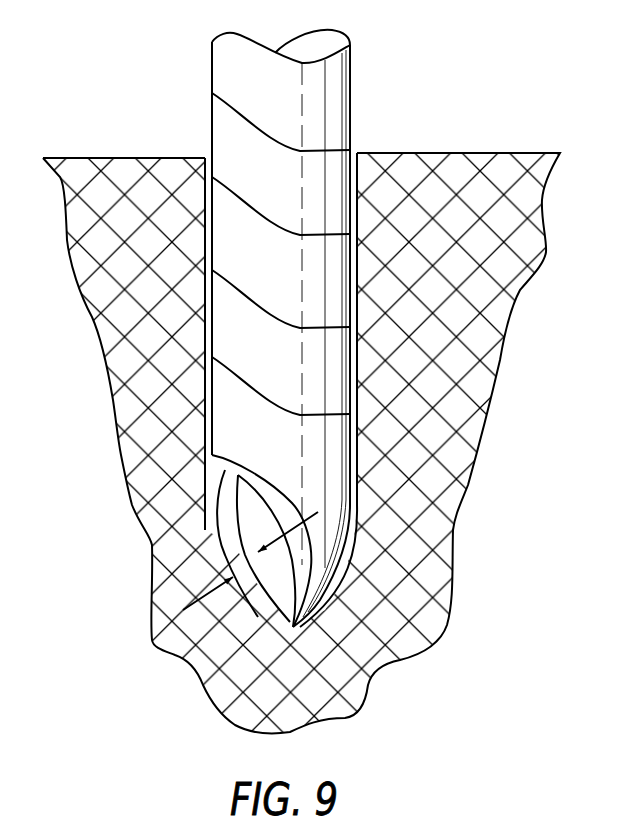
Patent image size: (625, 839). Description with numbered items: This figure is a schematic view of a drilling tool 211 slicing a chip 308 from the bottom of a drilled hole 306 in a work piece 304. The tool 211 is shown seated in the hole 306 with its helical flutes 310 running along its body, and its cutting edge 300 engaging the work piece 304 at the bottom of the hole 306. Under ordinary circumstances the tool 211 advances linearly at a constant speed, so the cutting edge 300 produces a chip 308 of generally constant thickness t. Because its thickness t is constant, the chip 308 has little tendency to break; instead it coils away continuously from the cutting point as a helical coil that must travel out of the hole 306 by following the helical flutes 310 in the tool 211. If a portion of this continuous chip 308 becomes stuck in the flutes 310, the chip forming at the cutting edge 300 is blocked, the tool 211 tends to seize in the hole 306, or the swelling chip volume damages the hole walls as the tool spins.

The drilling tool 211 is at (333, 94).
The cutting edge 300 is at (317, 582).
The work piece 304 is at (165, 185).
The drilled hole 306 is at (205, 440).
The chip 308 is at (235, 522).
The helical flutes 310 is at (352, 150).
The thickness t is at (183, 610).